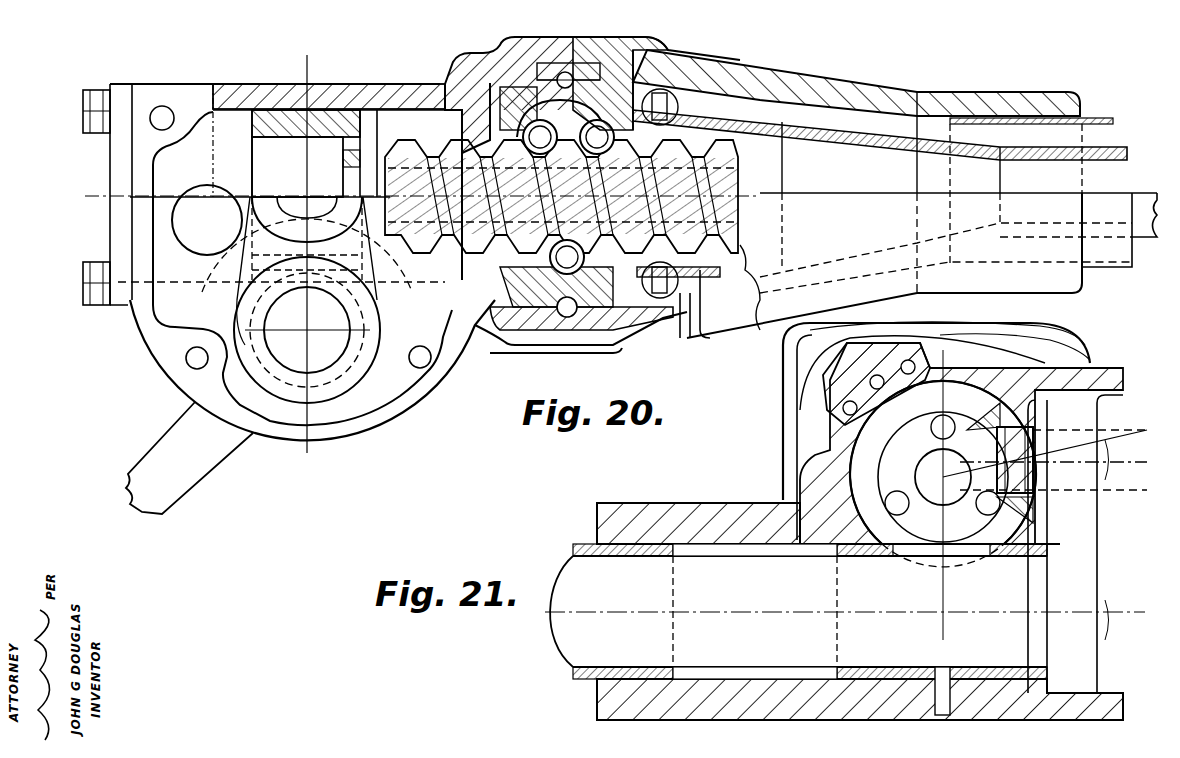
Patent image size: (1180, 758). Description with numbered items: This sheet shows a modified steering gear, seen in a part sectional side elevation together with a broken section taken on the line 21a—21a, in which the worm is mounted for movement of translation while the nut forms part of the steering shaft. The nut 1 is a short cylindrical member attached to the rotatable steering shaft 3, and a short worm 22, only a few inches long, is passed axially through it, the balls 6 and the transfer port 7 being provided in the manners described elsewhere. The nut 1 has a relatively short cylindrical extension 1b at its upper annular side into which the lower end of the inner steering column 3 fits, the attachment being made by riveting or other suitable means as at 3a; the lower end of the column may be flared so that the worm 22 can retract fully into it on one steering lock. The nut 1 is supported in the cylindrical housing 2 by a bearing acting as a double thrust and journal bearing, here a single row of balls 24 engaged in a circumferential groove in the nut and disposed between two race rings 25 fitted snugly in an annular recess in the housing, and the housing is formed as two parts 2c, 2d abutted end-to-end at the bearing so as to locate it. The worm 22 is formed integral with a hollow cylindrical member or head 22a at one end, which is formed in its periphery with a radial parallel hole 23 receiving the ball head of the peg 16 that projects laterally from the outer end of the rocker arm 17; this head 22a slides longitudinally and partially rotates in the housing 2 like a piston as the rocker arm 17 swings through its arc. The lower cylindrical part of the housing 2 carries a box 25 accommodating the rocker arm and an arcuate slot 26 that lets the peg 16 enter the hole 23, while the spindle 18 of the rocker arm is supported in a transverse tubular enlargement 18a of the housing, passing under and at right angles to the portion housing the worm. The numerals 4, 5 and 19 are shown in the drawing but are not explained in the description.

In FIG. 20, the nut 1 is at (627, 100).
In FIG. 21, the nut 1 is at (913, 540).
In FIG. 20, the cylindrical extension 1b is at (700, 330).
In FIG. 21, the cylindrical housing 2 is at (830, 450).
In FIG. 20, the housing part 2c is at (500, 350).
In FIG. 20, the housing part 2d is at (668, 345).
In FIG. 20, the steering shaft 3 is at (868, 135).
In FIG. 20, the riveting 3a is at (678, 106).
In FIG. 20, the shaft 4 is at (736, 238).
In FIG. 20, the ball bearing 5 is at (610, 338).
In FIG. 20, the balls 6 is at (540, 338).
In FIG. 20, the transfer port 7 is at (557, 120).
In FIG. 21, the peg 16 is at (1020, 455).
In FIG. 20, the rocker arm 17 is at (246, 292).
In FIG. 21, the rocker arm 17 is at (1080, 540).
In FIG. 20, the spindle 18 is at (340, 322).
In FIG. 21, the spindle 18 is at (578, 636).
In FIG. 21, the transverse tubular enlargement 18a is at (690, 512).
In FIG. 20, the arm 19 is at (177, 477).
In FIG. 20, the section line 21a is at (422, 256).
In FIG. 20, the worm 22 is at (722, 178).
In FIG. 20, the cylindrical member or head 22a is at (270, 120).
In FIG. 21, the radial parallel hole 23 is at (980, 433).
In FIG. 20, the balls 24 is at (585, 78).
In FIG. 21, the balls 24 is at (828, 400).
In FIG. 20, the race rings 25 is at (167, 357).
In FIG. 20, the arcuate slot 26 is at (200, 237).